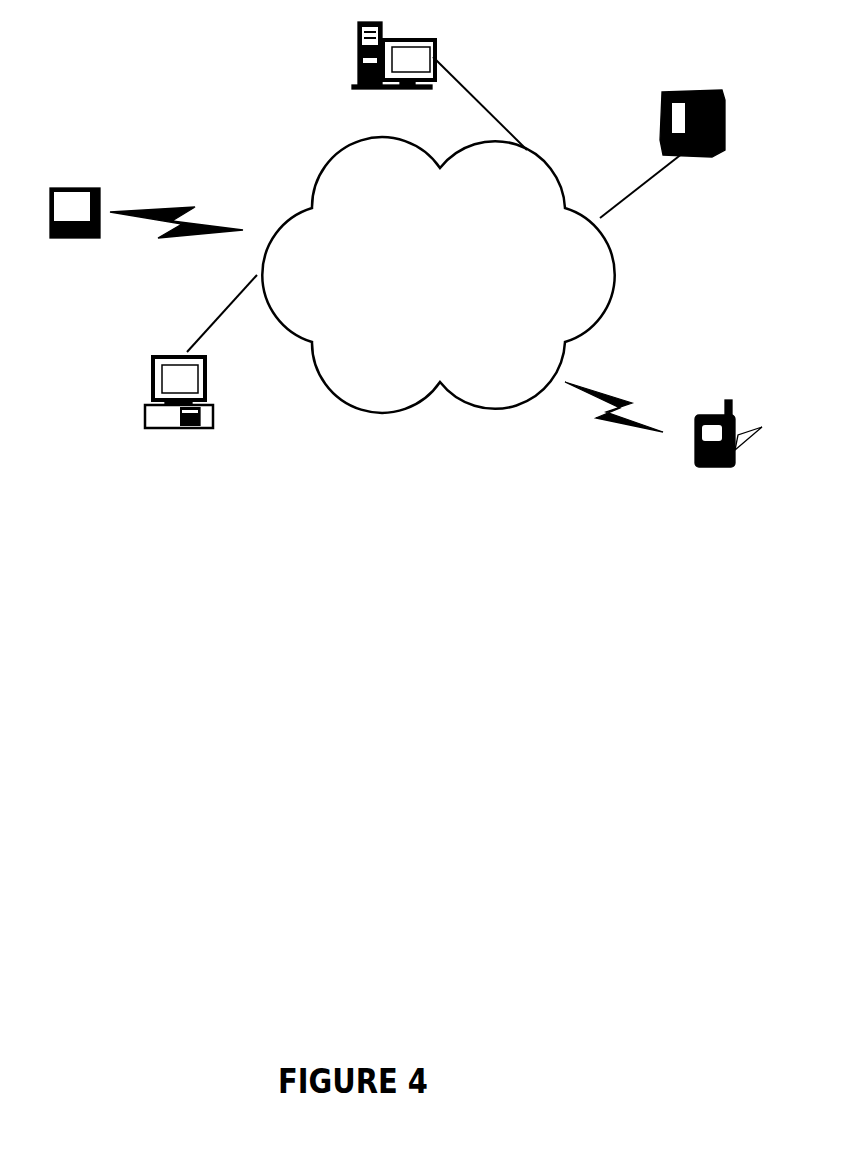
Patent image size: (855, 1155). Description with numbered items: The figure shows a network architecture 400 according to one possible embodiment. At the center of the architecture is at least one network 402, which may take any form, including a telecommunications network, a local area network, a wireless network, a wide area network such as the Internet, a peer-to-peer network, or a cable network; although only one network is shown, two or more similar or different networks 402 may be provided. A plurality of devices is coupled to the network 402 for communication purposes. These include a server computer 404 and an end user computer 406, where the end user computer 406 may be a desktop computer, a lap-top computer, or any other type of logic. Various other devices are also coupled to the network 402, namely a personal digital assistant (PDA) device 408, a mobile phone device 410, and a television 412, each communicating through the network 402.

The network architecture 400 is at (358, 680).
The network 402 is at (493, 412).
The server computer 404 is at (360, 57).
The end user computer 406 is at (145, 407).
The personal digital assistant (PDA) device 408 is at (72, 190).
The mobile phone device 410 is at (693, 417).
The television 412 is at (673, 83).